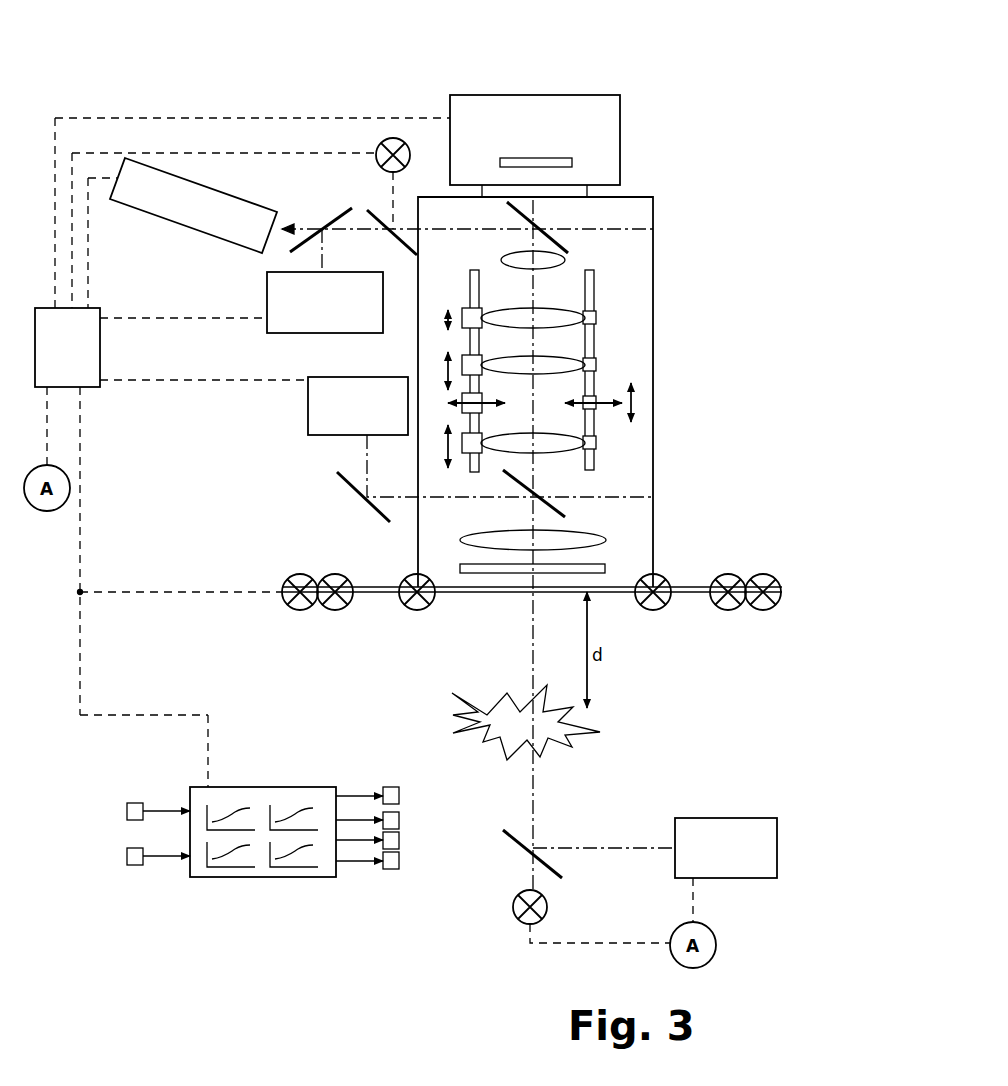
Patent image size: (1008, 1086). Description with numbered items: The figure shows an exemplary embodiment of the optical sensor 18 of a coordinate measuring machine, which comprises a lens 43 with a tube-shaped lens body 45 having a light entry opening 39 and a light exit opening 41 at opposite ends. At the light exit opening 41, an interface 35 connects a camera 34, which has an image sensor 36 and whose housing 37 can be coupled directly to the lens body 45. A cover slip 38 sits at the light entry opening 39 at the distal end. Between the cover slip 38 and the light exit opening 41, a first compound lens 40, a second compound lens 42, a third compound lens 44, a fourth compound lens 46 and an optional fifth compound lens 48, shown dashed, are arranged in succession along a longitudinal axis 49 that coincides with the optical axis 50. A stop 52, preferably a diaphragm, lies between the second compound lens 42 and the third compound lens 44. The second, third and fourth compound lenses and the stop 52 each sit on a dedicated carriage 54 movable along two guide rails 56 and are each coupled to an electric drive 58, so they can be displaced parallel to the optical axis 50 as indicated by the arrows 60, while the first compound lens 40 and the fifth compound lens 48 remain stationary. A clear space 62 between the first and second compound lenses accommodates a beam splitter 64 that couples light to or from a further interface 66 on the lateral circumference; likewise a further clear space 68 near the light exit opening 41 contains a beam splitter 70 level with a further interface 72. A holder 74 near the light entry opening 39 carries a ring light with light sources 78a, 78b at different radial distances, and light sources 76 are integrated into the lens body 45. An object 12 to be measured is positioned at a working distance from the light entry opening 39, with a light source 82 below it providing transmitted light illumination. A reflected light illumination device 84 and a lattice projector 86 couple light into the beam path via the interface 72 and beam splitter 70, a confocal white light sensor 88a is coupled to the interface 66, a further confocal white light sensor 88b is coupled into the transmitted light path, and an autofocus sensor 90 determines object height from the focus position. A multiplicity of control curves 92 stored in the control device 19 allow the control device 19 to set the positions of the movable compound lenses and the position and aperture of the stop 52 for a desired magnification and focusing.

The object to be measured 12 is at (485, 732).
The optical sensor 18 is at (645, 75).
The control device 19 is at (82, 358).
The camera 34 is at (570, 93).
The interface 35 is at (580, 190).
The image sensor 36 is at (555, 158).
The housing 37 is at (495, 95).
The cover slip 38 is at (605, 568).
The light entry opening 39 is at (490, 592).
The first compound lens 40 is at (608, 540).
The light exit opening 41 is at (490, 185).
The second compound lens 42 is at (600, 455).
The lens 43 is at (410, 537).
The third compound lens 44 is at (585, 365).
The lens body 45 is at (653, 258).
The fourth compound lens 46 is at (543, 307).
The fifth compound lens 48 is at (573, 252).
The longitudinal axis 49 is at (528, 625).
The optical axis 50 is at (535, 783).
The stop 52 is at (557, 390).
The carriage 54 is at (596, 318).
The guide rails 56 is at (596, 445).
The electric drive 58 is at (465, 308).
The arrows 60 is at (635, 405).
The clear space 62 is at (490, 526).
The beam splitter 64 is at (562, 512).
The interface 66 is at (417, 497).
The clear space 68 is at (484, 222).
The beam splitter 70 is at (550, 247).
The interface 72 is at (418, 215).
The holder 74 is at (380, 598).
The light sources 76 is at (648, 612).
The light source 78a is at (725, 612).
The light source 78b is at (760, 612).
The light source 82 is at (547, 907).
The reflected light illumination device 84 is at (388, 140).
The lattice projector 86 is at (267, 302).
The confocal white light sensor 88a is at (308, 407).
The confocal white light sensor 88b is at (712, 818).
The autofocus sensor 90 is at (138, 205).
The control curves 92 is at (245, 805).